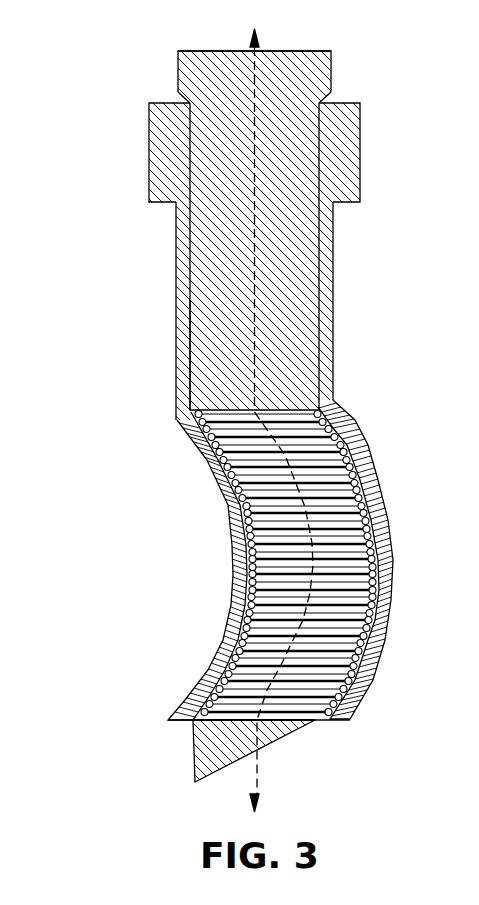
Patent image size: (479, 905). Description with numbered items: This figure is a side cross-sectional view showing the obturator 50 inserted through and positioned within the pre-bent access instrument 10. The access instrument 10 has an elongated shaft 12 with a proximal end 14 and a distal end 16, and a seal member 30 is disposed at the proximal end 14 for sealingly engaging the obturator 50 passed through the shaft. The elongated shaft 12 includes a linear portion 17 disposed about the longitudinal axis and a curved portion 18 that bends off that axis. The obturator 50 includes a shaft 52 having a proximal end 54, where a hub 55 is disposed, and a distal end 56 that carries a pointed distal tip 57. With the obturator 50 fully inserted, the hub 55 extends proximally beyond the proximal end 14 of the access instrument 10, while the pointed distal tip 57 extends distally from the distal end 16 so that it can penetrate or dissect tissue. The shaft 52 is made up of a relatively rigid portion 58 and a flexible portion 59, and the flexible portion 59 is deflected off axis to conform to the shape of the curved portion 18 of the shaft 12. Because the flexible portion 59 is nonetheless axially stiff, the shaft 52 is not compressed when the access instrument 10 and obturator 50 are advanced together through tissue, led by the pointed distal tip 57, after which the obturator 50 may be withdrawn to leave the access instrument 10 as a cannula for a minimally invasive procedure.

The access instrument 10 is at (352, 361).
The elongated shaft 12 is at (176, 262).
The proximal end 14 is at (360, 152).
The distal end 16 is at (353, 718).
The linear portion 17 is at (333, 312).
The curved portion 18 is at (394, 566).
The seal member 30 is at (155, 135).
The obturator 50 is at (166, 59).
The shaft 52 is at (307, 264).
The proximal end 54 is at (308, 118).
The hub 55 is at (332, 62).
The distal end 56 is at (317, 723).
The pointed distal tip 57 is at (278, 748).
The rigid portion 58 is at (212, 325).
The flexible portion 59 is at (250, 565).